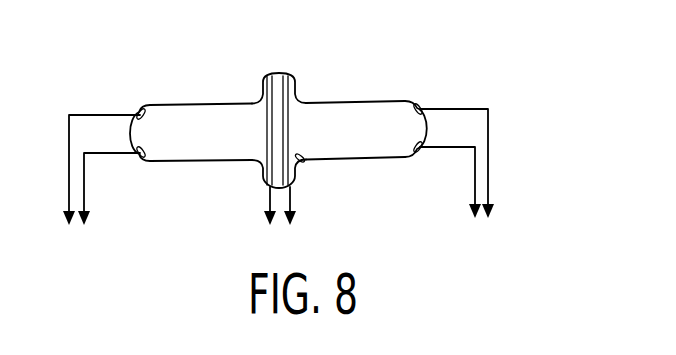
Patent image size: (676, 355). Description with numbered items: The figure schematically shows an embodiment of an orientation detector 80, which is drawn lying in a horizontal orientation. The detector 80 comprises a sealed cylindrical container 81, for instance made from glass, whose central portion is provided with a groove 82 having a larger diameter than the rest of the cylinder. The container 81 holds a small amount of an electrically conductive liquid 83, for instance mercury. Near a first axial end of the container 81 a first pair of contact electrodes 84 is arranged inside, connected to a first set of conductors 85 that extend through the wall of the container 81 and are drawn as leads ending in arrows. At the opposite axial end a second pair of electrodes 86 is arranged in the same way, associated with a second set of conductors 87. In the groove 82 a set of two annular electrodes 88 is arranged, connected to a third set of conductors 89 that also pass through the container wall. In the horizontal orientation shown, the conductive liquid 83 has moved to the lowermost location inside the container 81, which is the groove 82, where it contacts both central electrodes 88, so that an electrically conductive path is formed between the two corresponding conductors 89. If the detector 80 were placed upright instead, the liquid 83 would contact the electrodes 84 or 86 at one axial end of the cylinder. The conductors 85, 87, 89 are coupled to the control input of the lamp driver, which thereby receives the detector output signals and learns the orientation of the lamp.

The orientation detector 80 is at (290, 116).
The cylindrical container 81 is at (358, 101).
The groove 82 is at (293, 84).
The electrically conductive liquid 83 is at (300, 159).
The first pair of contact electrodes 84 is at (140, 111).
The first set of conductors 85 is at (101, 170).
The second pair of electrodes 86 is at (422, 108).
The second set of conductors 87 is at (468, 163).
The annular electrodes 88 is at (270, 75).
The third set of conductors 89 is at (293, 210).